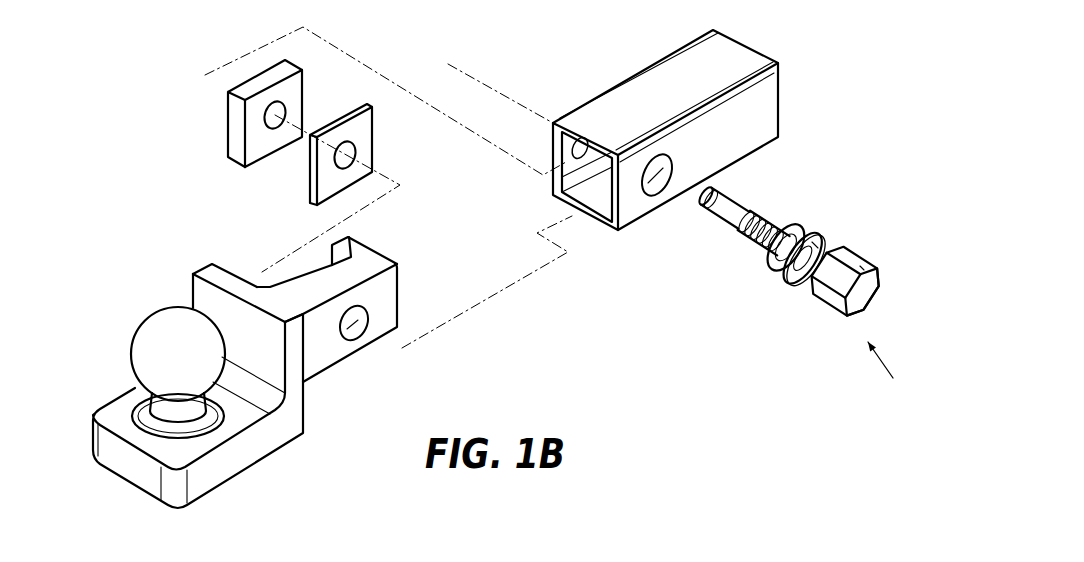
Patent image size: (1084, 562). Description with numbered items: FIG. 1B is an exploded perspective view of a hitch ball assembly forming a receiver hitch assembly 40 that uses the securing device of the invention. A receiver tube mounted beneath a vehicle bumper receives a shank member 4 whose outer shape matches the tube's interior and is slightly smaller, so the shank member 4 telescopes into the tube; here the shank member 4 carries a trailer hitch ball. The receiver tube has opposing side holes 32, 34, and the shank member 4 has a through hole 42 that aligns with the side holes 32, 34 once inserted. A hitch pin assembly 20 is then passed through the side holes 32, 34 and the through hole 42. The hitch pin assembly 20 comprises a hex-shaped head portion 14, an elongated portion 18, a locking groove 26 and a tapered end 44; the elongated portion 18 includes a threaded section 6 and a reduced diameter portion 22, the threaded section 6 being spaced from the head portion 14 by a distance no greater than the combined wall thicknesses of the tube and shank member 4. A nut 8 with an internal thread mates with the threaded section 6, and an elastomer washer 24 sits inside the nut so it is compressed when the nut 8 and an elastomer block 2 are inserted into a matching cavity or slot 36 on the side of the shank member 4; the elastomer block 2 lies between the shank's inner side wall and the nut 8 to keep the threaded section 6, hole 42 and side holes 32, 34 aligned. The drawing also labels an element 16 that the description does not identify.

The elastomer block 2 is at (308, 182).
The shank member 4 is at (640, 207).
The threaded section 6 is at (767, 220).
The nut 8 is at (228, 123).
The head portion 14 is at (873, 303).
The nut end face 16 is at (862, 268).
The elongated portion 18 is at (822, 240).
The hitch pin assembly 20 is at (889, 376).
The reduced diameter portion 22 is at (723, 223).
The elastomer washer 24 is at (792, 277).
The locking groove 26 is at (713, 193).
The side hole 32 is at (575, 150).
The side hole 34 is at (657, 152).
The matching cavity 36 is at (308, 268).
The receiver hitch assembly 40 is at (118, 410).
The through hole 42 is at (362, 326).
The tapered end 44 is at (700, 205).